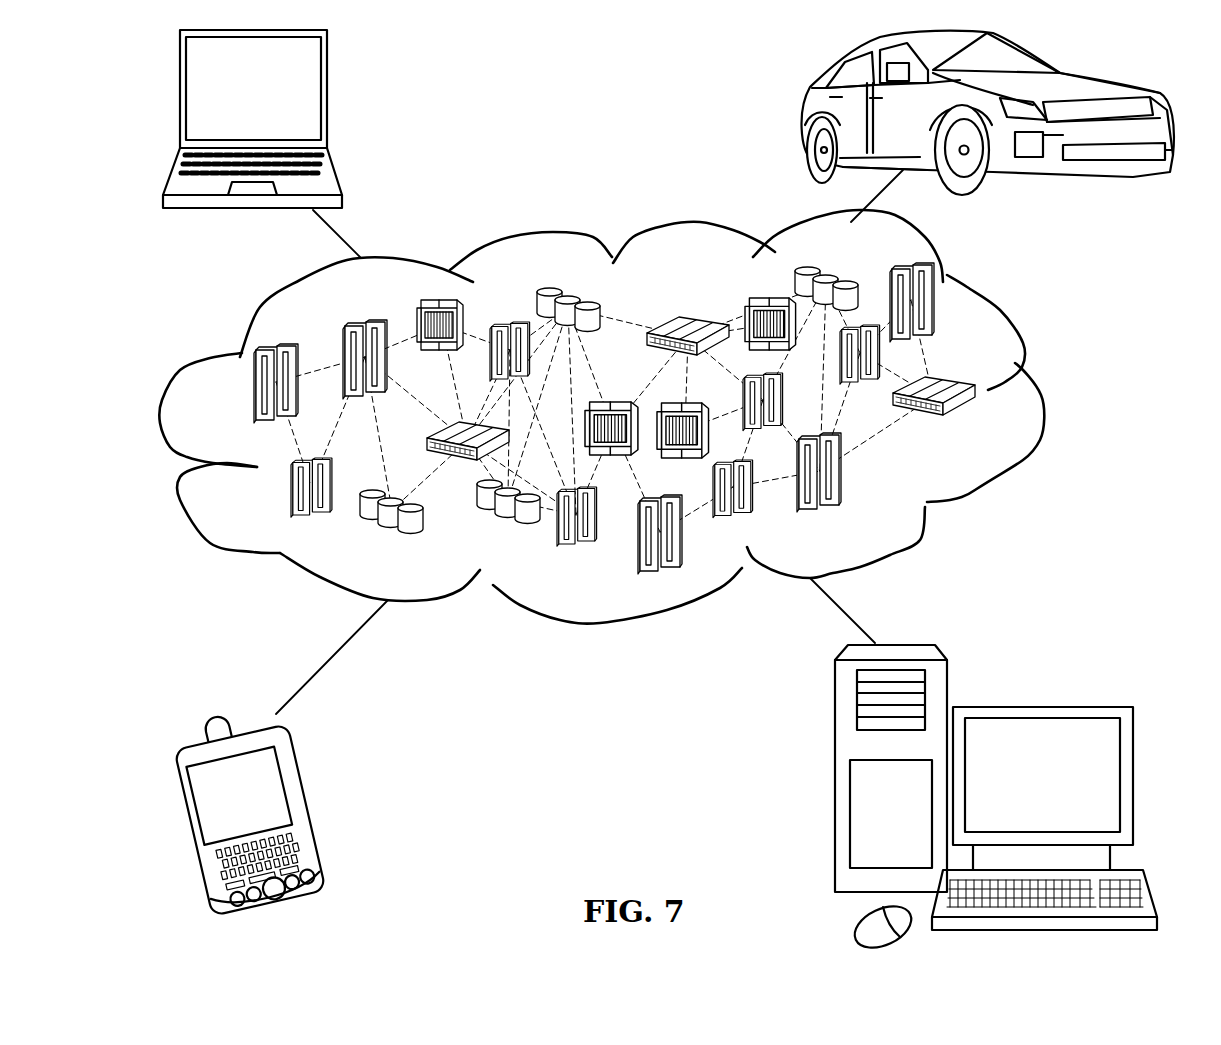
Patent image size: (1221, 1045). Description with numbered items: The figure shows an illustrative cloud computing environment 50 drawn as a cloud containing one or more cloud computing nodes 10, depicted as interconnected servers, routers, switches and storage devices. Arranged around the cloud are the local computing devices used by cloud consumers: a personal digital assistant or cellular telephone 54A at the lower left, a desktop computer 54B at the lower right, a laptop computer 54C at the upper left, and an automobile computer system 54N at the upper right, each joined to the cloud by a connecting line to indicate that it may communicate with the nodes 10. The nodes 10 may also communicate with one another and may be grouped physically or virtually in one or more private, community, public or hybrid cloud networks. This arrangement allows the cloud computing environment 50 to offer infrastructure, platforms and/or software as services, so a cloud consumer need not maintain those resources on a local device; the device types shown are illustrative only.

The cloud computing node 10 is at (977, 427).
The cloud computing environment 50 is at (636, 417).
The personal digital assistant or cellular telephone 54A is at (317, 808).
The desktop computer 54B is at (1040, 707).
The laptop computer 54C is at (327, 98).
The automobile computer system 54N is at (800, 115).